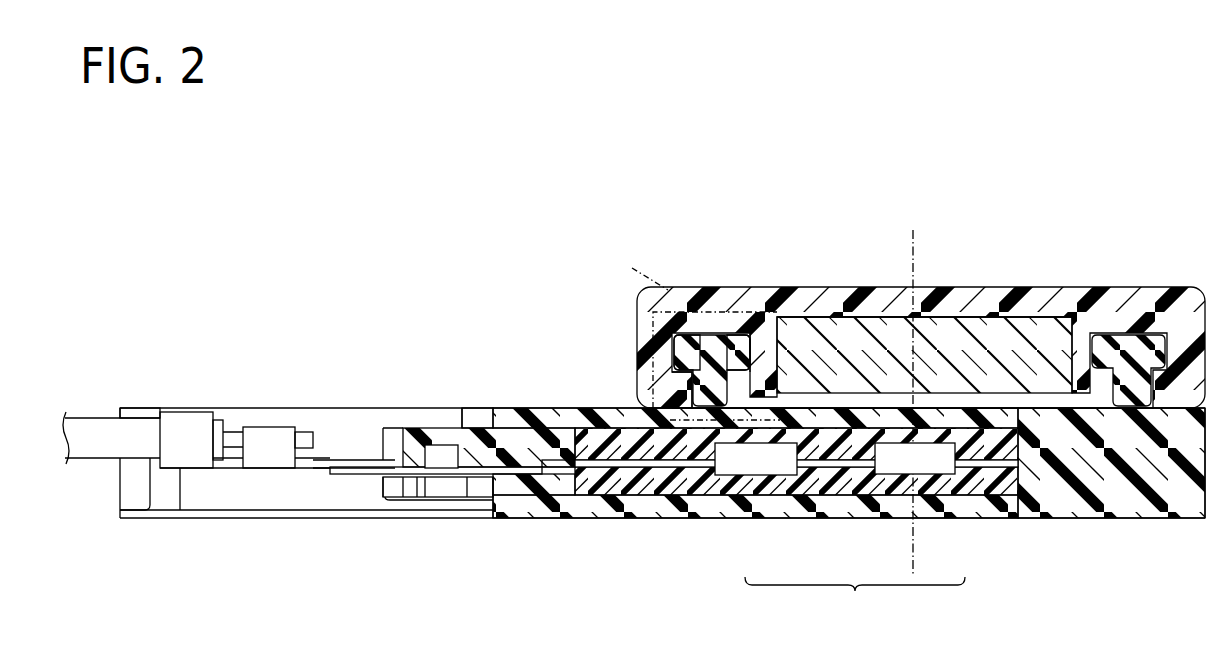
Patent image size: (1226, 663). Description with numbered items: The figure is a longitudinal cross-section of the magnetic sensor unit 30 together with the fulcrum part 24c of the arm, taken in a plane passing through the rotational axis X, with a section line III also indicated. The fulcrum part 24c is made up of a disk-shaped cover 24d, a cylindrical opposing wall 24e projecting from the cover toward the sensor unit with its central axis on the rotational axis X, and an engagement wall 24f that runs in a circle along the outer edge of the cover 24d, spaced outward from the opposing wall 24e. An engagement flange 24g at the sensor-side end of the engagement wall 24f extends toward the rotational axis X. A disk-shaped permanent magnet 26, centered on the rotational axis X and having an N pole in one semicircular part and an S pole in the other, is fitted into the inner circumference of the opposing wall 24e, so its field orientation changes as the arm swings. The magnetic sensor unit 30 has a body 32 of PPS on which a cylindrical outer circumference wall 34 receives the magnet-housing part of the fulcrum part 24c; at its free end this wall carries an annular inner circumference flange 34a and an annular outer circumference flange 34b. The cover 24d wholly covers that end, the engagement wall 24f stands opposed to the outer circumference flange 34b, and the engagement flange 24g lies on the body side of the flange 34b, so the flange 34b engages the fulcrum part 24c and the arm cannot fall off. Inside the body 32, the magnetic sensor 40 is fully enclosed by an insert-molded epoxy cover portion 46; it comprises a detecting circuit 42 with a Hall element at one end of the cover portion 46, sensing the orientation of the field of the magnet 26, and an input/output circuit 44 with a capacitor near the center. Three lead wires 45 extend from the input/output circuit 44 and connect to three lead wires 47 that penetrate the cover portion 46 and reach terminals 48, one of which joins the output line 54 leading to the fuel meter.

The fulcrum part 24c is at (852, 286).
The cover 24d is at (993, 297).
The opposing wall 24e is at (742, 325).
The engagement wall 24f is at (643, 345).
The engagement flange 24g is at (677, 386).
The magnet 26 is at (1027, 327).
The magnetic sensor unit 30 is at (503, 403).
The body 32 is at (542, 407).
The outer circumference wall 34 is at (718, 347).
The inner circumference flange 34a is at (742, 347).
The outer circumference flange 34b is at (688, 347).
The magnetic sensor 40 is at (855, 598).
The detecting circuit 42 is at (933, 475).
The input/output circuit 44 is at (744, 476).
The lead wires 45 is at (627, 494).
The cover portion 46 is at (643, 494).
The lead wires 47 is at (434, 468).
The terminals 48 is at (323, 460).
The output line 54 is at (97, 428).
The rotational axis X is at (915, 268).
The section line III is at (632, 268).